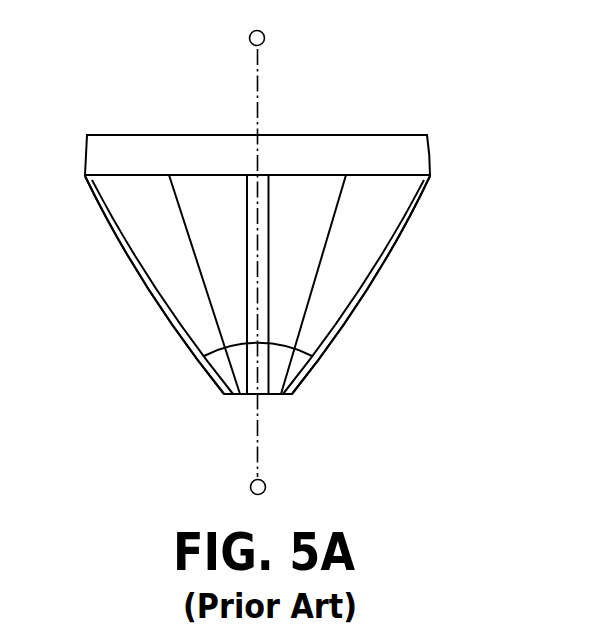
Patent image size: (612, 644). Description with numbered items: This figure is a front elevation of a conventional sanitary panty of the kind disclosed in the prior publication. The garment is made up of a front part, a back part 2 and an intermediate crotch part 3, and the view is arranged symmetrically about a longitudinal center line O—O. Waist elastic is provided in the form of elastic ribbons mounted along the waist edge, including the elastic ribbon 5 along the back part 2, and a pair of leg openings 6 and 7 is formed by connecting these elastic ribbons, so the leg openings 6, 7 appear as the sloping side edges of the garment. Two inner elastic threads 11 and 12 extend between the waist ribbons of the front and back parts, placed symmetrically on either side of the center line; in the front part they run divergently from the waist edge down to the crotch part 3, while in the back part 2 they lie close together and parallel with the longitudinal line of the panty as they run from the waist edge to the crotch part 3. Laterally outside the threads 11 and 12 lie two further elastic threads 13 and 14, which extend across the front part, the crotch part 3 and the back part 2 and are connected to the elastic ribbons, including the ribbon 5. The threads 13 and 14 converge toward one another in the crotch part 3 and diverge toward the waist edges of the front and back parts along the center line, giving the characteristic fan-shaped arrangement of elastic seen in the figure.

The back part 2 is at (377, 198).
The crotch part 3 is at (303, 373).
The elastic ribbon 5 is at (392, 138).
The leg opening 6 is at (358, 298).
The leg opening 7 is at (150, 300).
The elastic thread 11 is at (272, 214).
The elastic thread 12 is at (246, 214).
The elastic thread 13 is at (318, 248).
The elastic thread 14 is at (187, 225).